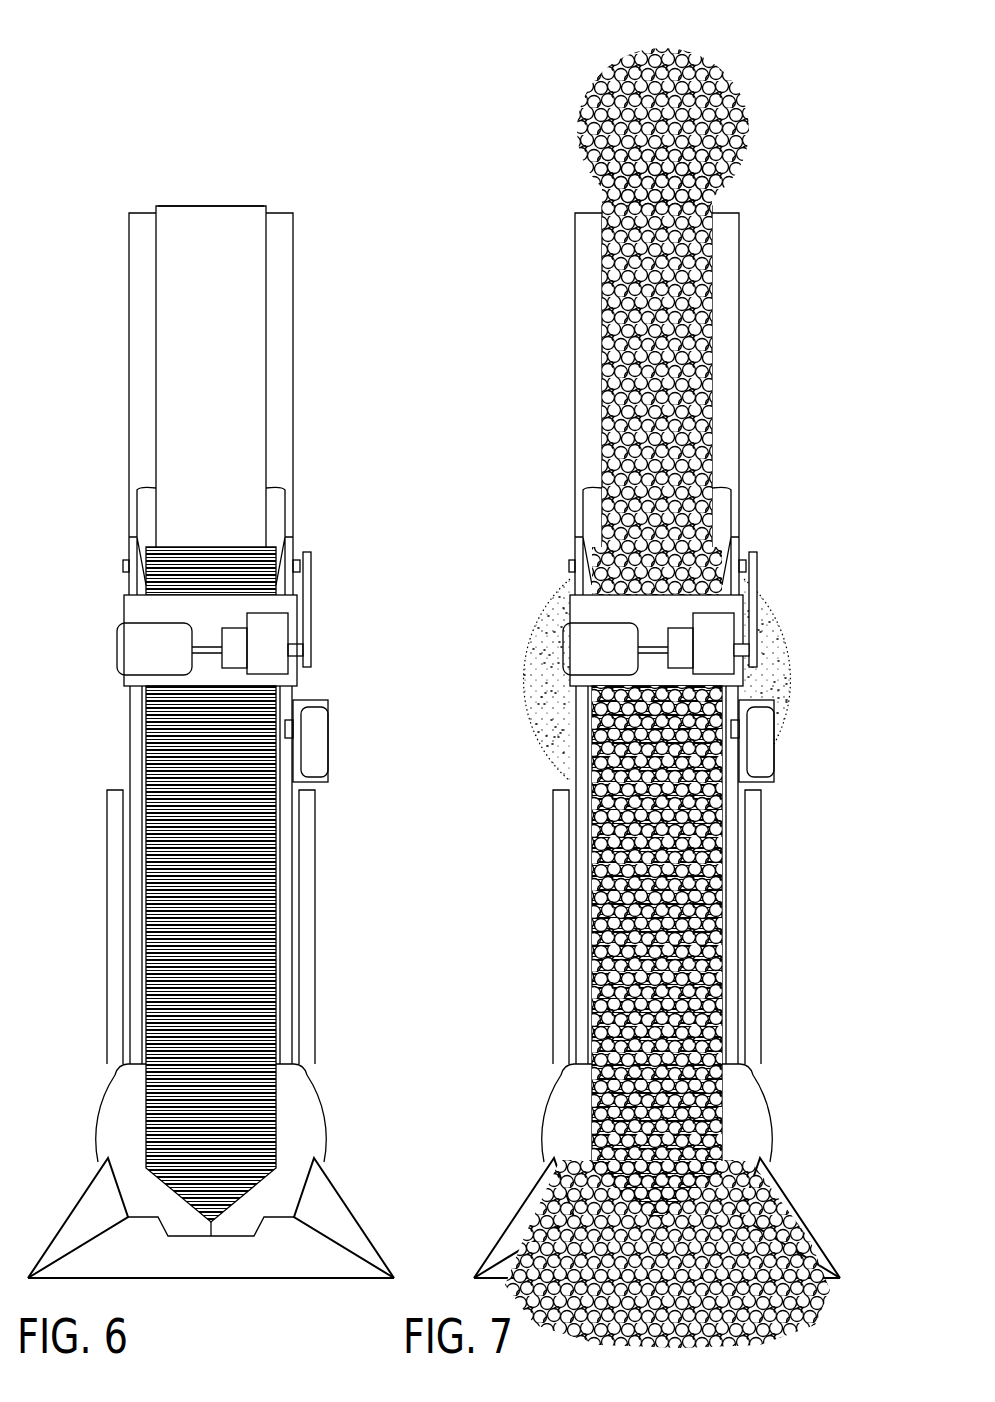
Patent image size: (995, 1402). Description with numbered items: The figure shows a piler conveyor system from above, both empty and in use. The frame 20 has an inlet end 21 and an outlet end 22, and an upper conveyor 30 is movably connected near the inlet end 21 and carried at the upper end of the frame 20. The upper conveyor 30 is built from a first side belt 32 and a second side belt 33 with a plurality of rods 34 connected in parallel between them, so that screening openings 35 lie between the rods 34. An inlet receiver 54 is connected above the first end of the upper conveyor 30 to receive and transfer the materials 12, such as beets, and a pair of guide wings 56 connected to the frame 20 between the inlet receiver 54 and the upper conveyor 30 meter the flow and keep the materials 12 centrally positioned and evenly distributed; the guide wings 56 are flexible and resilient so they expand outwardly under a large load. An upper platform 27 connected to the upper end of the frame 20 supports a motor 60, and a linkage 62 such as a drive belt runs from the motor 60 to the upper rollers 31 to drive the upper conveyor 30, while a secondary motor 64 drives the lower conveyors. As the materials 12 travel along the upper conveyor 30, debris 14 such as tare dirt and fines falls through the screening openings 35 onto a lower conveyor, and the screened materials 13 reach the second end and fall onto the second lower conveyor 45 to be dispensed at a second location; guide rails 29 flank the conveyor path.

In FIG. 7, the materials 12 is at (730, 945).
In FIG. 7, the screened materials 13 is at (733, 122).
In FIG. 7, the debris 14 is at (777, 665).
In FIG. 6, the frame 20 is at (136, 753).
In FIG. 7, the frame 20 is at (769, 856).
In FIG. 6, the inlet end 21 is at (235, 1282).
In FIG. 6, the outlet end 22 is at (210, 204).
In FIG. 6, the upper platform 27 is at (233, 614).
In FIG. 6, the guide rails 29 is at (283, 285).
In FIG. 6, the upper conveyor 30 is at (257, 945).
In FIG. 6, the upper rollers 31 is at (288, 583).
In FIG. 7, the upper rollers 31 is at (745, 558).
In FIG. 6, the first side belt 32 is at (143, 930).
In FIG. 6, the second side belt 33 is at (287, 1010).
In FIG. 6, the rods 34 is at (243, 868).
In FIG. 6, the screening openings 35 is at (255, 828).
In FIG. 6, the second lower conveyor 45 is at (240, 362).
In FIG. 6, the inlet receiver 54 is at (330, 1213).
In FIG. 7, the inlet receiver 54 is at (785, 1200).
In FIG. 6, the guide wings 56 is at (300, 1120).
In FIG. 7, the guide wings 56 is at (760, 1118).
In FIG. 6, the motor 60 is at (133, 638).
In FIG. 6, the linkage 62 is at (308, 630).
In FIG. 7, the linkage 62 is at (753, 582).
In FIG. 6, the secondary motor 64 is at (318, 733).
In FIG. 7, the secondary motor 64 is at (763, 737).